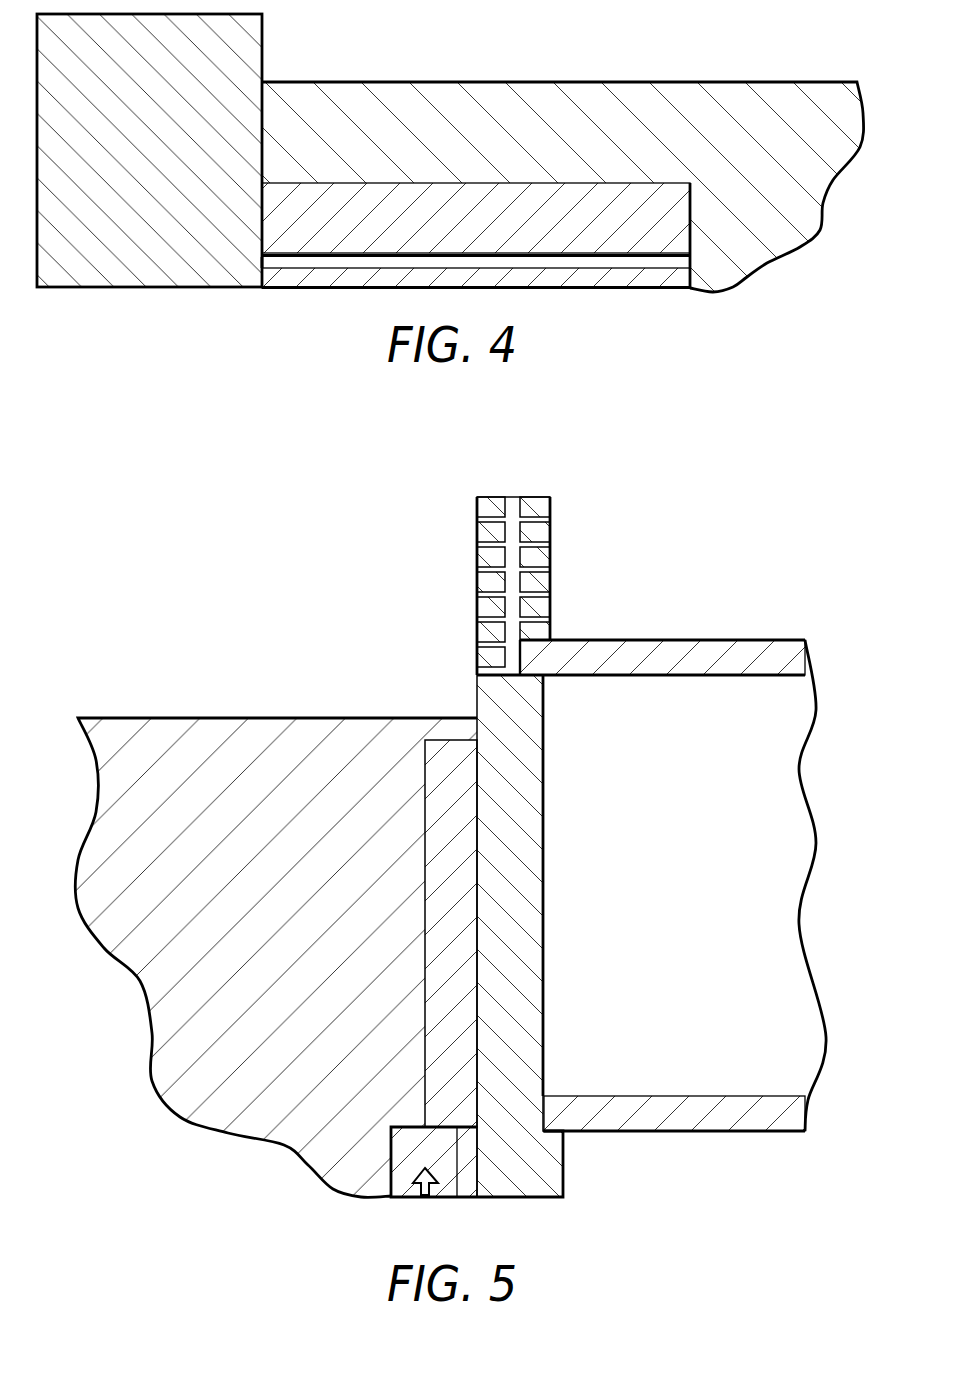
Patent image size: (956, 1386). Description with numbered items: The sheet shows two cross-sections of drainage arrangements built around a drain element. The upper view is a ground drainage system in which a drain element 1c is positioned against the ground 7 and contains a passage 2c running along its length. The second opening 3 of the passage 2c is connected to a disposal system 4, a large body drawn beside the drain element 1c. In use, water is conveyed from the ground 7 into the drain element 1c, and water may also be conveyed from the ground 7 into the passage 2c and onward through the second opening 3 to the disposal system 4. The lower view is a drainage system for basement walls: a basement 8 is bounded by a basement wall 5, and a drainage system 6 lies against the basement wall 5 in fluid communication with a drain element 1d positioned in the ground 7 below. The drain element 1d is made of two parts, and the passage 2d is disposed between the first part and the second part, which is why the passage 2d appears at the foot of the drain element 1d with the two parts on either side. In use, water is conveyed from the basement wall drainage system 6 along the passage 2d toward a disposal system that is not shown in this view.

In FIG. 4, the drain element 1c is at (473, 193).
In FIG. 4, the passage 2c is at (622, 262).
In FIG. 4, the second opening 3 is at (263, 262).
In FIG. 4, the disposal system 4 is at (97, 272).
In FIG. 4, the ground 7 is at (718, 90).
In FIG. 5, the ground 7 is at (276, 786).
In FIG. 5, the basement 8 is at (691, 787).
In FIG. 5, the basement wall 5 is at (531, 987).
In FIG. 5, the drainage system 6 is at (465, 875).
In FIG. 5, the drain element 1d is at (450, 1157).
In FIG. 5, the passage 2d is at (428, 1197).